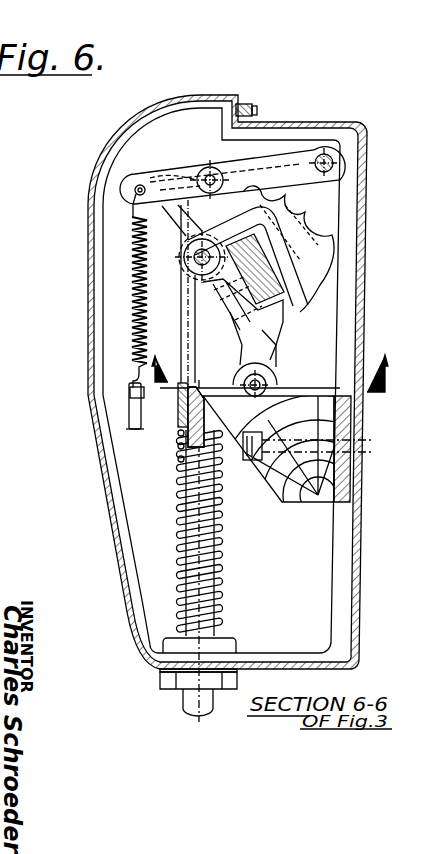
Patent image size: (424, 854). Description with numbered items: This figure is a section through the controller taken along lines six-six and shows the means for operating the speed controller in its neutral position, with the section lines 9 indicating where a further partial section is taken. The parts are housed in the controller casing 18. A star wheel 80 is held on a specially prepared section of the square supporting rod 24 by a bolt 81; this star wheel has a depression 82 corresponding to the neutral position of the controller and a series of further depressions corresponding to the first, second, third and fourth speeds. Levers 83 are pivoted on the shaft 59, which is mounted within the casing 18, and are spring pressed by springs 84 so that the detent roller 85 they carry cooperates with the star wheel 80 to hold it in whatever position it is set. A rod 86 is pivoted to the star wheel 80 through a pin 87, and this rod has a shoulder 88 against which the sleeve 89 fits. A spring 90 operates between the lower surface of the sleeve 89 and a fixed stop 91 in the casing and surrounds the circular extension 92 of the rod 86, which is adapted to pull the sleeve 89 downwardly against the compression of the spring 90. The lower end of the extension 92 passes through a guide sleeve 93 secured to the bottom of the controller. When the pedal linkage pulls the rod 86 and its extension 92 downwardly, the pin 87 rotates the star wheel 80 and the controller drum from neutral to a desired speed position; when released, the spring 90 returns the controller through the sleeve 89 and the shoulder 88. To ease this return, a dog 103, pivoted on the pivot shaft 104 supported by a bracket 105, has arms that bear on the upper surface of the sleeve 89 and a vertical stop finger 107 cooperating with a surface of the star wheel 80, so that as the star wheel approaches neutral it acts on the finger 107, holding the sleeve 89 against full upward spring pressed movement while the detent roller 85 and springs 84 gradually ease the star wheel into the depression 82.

The casing 18 is at (113, 601).
The square supporting rod 24 is at (295, 290).
The shaft 59 is at (323, 155).
The star wheel 80 is at (332, 268).
The bolt 81 is at (279, 322).
The depression 82 is at (190, 188).
The levers 83 is at (275, 165).
The springs 84 is at (148, 302).
The detent roller 85 is at (222, 167).
The rod 86 is at (188, 318).
The pin 87 is at (193, 260).
The shoulder 88 is at (177, 410).
The sleeve 89 is at (178, 432).
The spring 90 is at (177, 502).
The fixed stop 91 is at (223, 638).
The circular extension 92 is at (222, 527).
The guide sleeve 93 is at (170, 680).
The dog 103 is at (127, 382).
The pivot shaft 104 is at (268, 385).
The bracket 105 is at (269, 367).
The vertical stop finger 107 is at (274, 347).
The section line 9- 9 is at (275, 373).